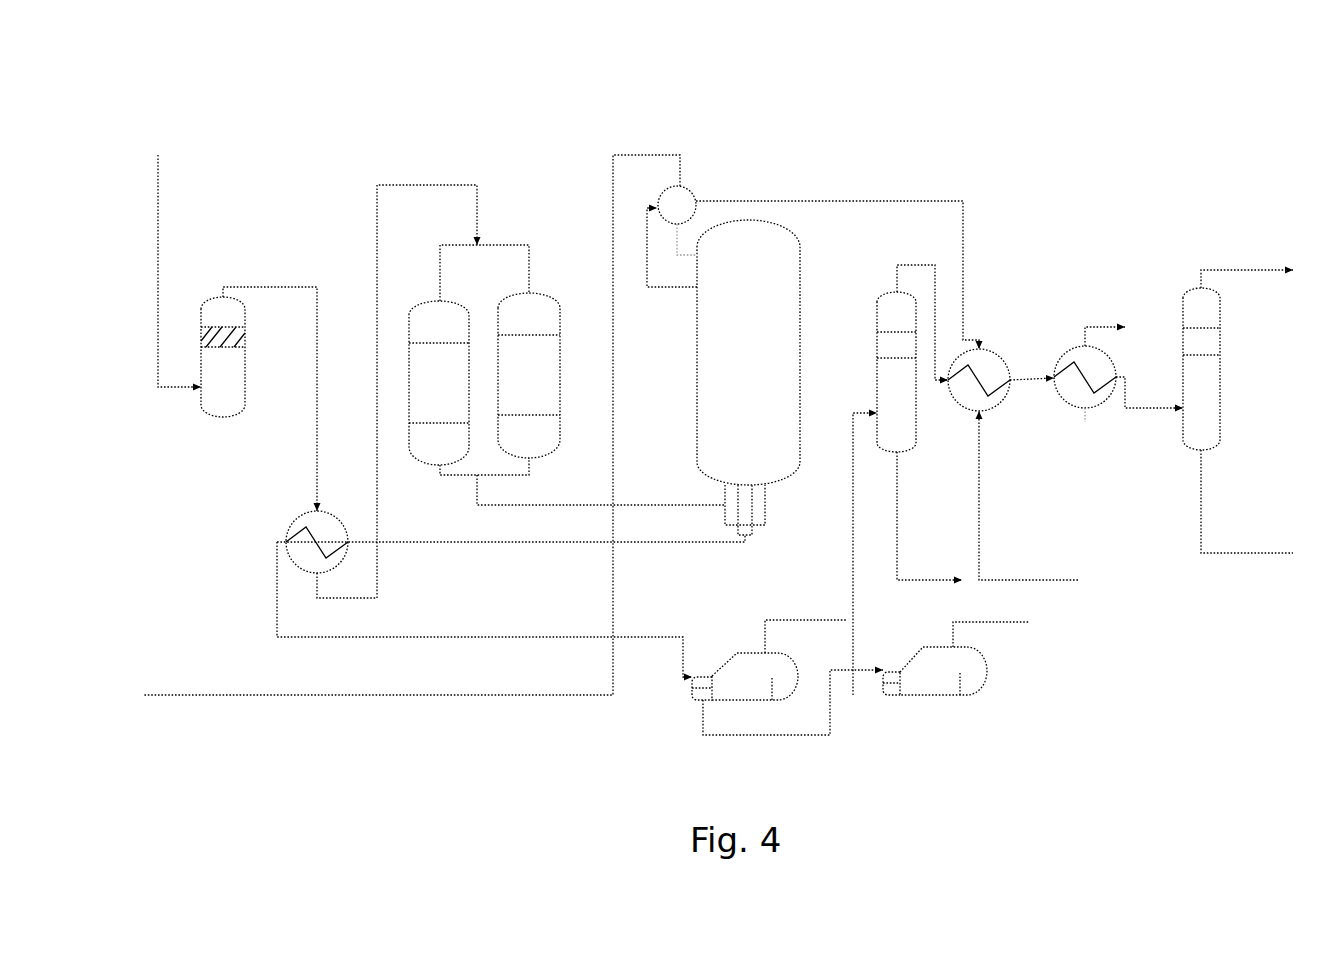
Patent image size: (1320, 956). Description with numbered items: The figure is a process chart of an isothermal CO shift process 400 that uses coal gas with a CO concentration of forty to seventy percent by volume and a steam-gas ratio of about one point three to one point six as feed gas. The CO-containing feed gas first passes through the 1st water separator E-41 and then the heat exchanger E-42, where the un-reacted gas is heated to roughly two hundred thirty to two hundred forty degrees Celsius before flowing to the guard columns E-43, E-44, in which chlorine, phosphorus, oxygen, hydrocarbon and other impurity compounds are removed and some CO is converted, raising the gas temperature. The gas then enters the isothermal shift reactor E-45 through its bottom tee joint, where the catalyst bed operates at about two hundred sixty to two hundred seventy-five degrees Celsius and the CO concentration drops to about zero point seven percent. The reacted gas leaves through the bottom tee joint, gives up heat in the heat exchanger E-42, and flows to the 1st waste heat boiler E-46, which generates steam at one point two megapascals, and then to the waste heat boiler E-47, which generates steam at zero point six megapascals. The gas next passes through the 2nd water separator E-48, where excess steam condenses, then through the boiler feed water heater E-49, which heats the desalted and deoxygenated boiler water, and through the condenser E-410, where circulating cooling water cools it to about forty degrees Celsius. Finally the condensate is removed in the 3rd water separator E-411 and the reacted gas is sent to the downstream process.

The CO shift conversion system 400 is at (343, 148).
The 1st water separator E-41 is at (223, 372).
The heat exchanger E-42 is at (317, 564).
The guard column E-43 is at (439, 401).
The guard column E-44 is at (529, 396).
The isothermal shift reactor E-45 is at (732, 360).
The 1st waste heat boiler E-46 is at (769, 675).
The waste heat boiler E-47 is at (956, 674).
The 2nd water separator E-48 is at (909, 388).
The boiler feed water heater E-49 is at (984, 404).
The condenser E-410 is at (1089, 385).
The 3rd water separator E-411 is at (1217, 381).